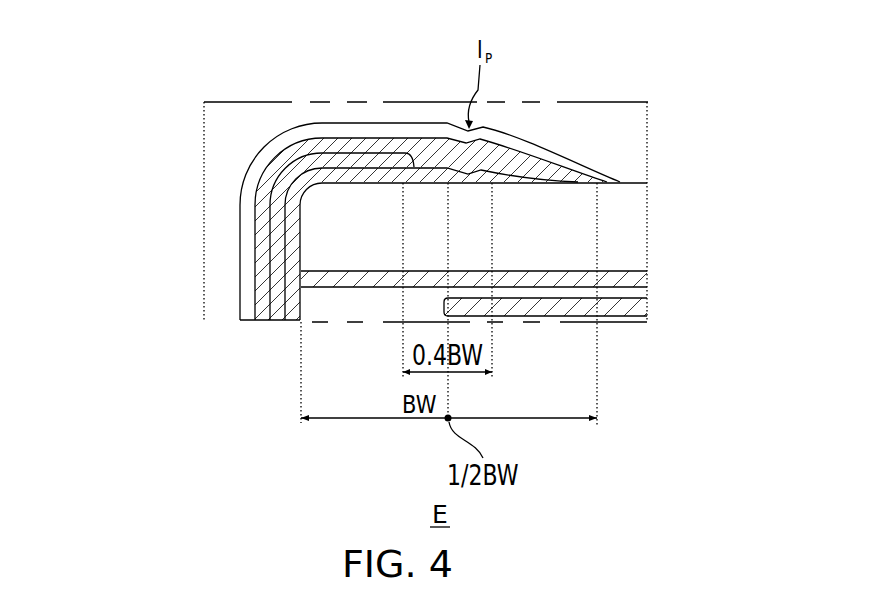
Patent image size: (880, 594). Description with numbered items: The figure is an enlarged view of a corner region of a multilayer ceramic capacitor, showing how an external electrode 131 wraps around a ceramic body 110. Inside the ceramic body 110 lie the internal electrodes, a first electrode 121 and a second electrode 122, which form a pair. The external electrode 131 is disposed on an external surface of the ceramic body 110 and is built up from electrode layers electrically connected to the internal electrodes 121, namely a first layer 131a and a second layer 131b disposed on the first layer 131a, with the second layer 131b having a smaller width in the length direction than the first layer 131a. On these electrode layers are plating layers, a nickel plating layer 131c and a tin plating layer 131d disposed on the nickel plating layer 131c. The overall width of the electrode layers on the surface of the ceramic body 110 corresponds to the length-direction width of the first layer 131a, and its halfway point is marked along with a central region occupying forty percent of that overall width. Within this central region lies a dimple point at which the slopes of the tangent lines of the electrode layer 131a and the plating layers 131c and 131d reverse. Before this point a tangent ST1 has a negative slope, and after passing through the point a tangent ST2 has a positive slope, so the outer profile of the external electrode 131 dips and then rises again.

The ceramic body 110 is at (628, 182).
The first electrode 121 is at (648, 272).
The second electrode 122 is at (640, 308).
The external electrode 131 is at (336, 221).
The first layer 131a is at (293, 287).
The second layer 131b is at (270, 262).
The nickel plating layer 131c is at (255, 232).
The tin plating layer 131d is at (240, 198).
The tangent ST1 is at (446, 115).
The tangent ST2 is at (494, 122).